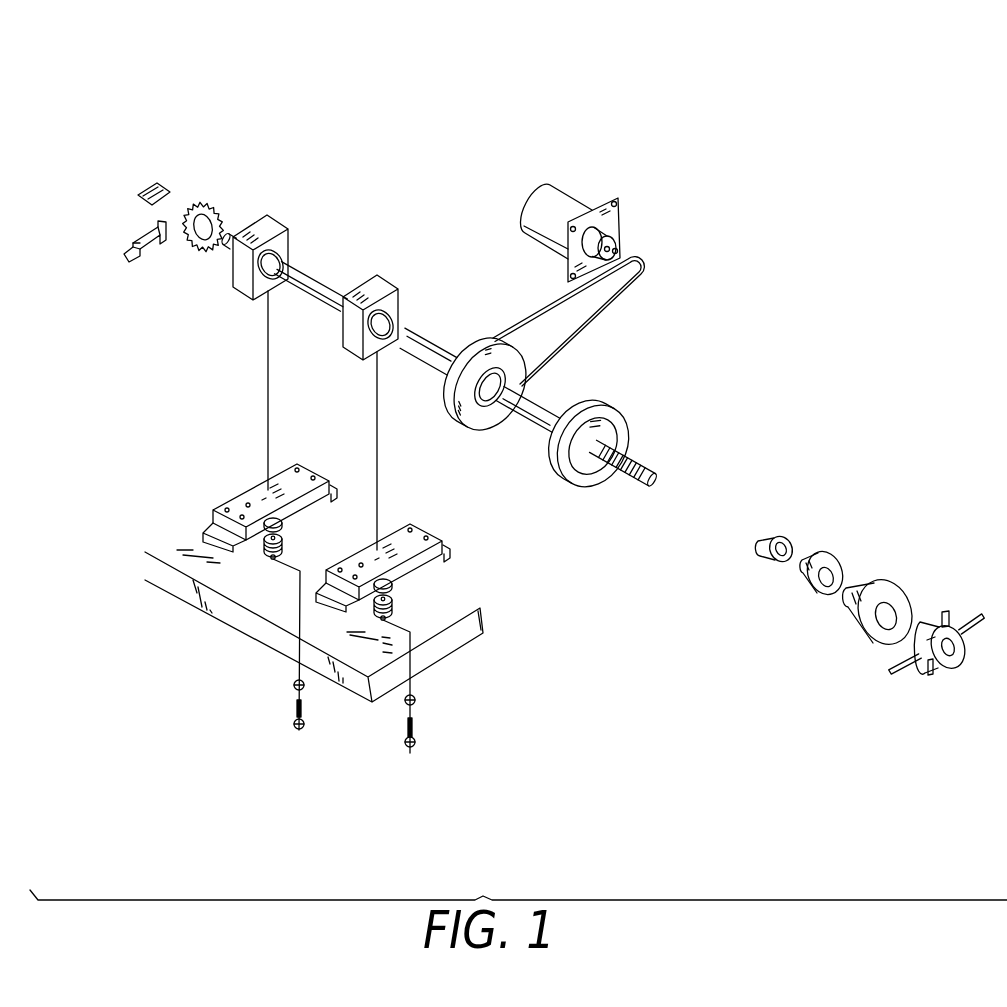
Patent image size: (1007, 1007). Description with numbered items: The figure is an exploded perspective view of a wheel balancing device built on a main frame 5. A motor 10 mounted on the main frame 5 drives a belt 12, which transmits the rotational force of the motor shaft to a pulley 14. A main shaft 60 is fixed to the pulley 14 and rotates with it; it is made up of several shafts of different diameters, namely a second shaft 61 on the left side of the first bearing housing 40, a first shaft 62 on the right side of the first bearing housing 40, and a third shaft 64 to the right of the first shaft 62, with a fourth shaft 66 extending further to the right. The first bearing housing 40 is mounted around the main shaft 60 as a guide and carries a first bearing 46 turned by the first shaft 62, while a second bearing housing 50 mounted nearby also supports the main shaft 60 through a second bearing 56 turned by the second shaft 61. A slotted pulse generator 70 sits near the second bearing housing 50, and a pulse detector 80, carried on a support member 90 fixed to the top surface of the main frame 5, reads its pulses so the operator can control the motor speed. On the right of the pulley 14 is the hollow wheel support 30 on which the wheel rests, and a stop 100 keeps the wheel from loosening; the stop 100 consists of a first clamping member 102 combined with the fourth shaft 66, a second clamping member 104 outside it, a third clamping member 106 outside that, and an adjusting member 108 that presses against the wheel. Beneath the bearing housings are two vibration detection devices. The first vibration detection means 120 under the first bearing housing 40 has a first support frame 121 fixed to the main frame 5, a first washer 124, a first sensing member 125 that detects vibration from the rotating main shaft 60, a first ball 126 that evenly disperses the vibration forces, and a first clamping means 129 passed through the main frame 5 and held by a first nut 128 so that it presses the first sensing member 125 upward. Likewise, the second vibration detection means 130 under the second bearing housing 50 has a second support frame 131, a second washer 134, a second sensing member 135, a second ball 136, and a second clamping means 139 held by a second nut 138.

The main frame 5 is at (171, 595).
The motor 10 is at (547, 250).
The belt 12 is at (627, 297).
The pulley 14 is at (482, 428).
The wheel support 30 is at (646, 414).
The first bearing housing 40 is at (416, 270).
The first bearing 46 is at (400, 282).
The second bearing housing 50 is at (311, 195).
The second bearing 56 is at (287, 240).
The main shaft 60 is at (639, 414).
The second shaft 61 is at (321, 284).
The first shaft 62 is at (424, 338).
The third shaft 64 is at (562, 402).
The fourth shaft 66 is at (652, 467).
The pulse generator 70 is at (218, 198).
The pulse detector 80 is at (175, 188).
The support member 90 is at (138, 257).
The stop 100 is at (877, 515).
The first clamping member 102 is at (787, 535).
The second clamping member 104 is at (838, 553).
The third clamping member 106 is at (903, 573).
The adjusting member 108 is at (970, 617).
The first vibration detection means 120 is at (435, 688).
The first support frame 121 is at (480, 637).
The first washer 124 is at (415, 702).
The first sensing member 125 is at (373, 606).
The first ball 126 is at (383, 620).
The first nut 128 is at (398, 578).
The first clamping means 129 is at (417, 742).
The second vibration detection means 130 is at (216, 615).
The second support frame 131 is at (252, 485).
The second washer 134 is at (290, 543).
The second sensing member 135 is at (264, 546).
The second ball 136 is at (273, 557).
The second nut 138 is at (294, 688).
The second clamping means 139 is at (298, 730).